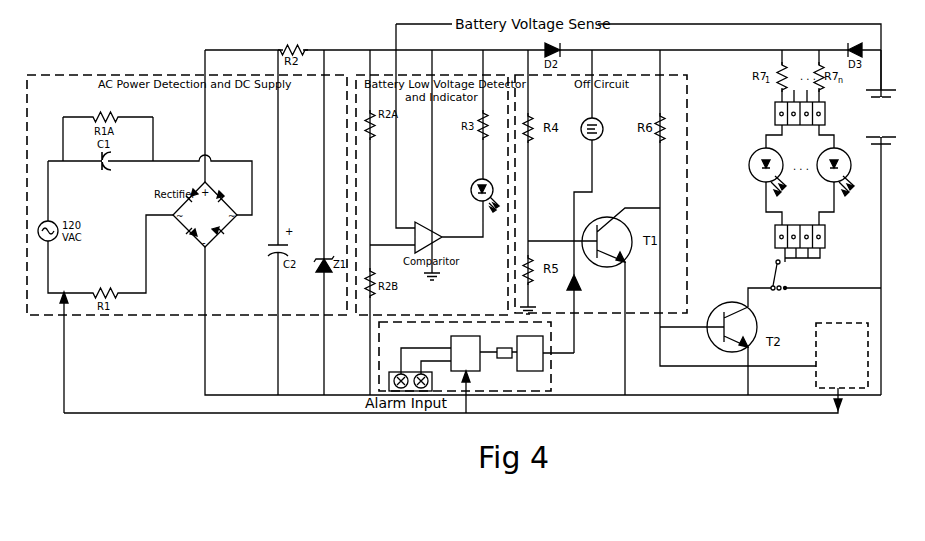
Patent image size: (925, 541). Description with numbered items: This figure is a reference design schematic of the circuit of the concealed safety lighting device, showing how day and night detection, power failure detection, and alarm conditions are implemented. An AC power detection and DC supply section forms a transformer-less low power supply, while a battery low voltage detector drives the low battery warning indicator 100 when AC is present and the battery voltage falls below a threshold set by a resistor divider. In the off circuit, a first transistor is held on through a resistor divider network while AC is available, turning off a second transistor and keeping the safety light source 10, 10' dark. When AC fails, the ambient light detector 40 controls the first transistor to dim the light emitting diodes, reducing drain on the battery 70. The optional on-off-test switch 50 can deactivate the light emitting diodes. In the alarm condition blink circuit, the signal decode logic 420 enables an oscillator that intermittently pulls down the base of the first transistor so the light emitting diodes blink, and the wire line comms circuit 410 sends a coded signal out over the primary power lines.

The low battery warning indicator 100 is at (496, 176).
The ambient light detector 40 is at (609, 118).
The safety light source 10 is at (753, 161).
The safety light source 10' is at (800, 166).
The battery 70 is at (889, 100).
The on-off-test switch 50 is at (797, 297).
The signal decode logic 420 is at (476, 367).
The wire line comms circuit 410 is at (842, 361).